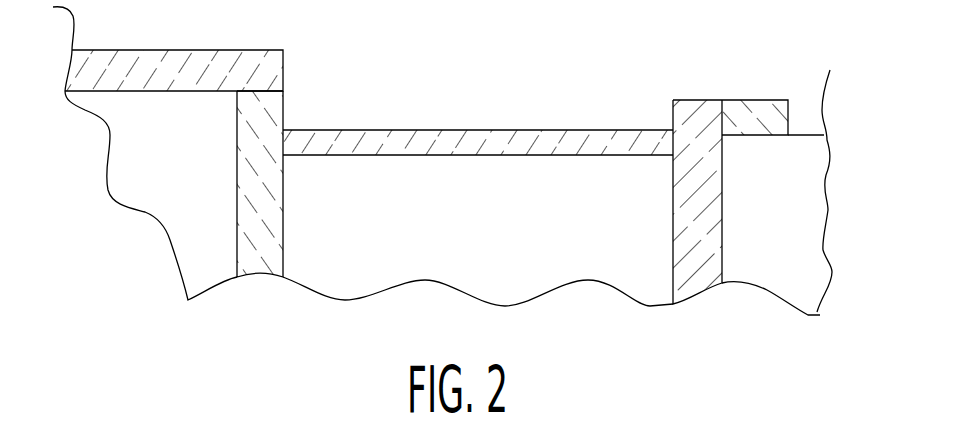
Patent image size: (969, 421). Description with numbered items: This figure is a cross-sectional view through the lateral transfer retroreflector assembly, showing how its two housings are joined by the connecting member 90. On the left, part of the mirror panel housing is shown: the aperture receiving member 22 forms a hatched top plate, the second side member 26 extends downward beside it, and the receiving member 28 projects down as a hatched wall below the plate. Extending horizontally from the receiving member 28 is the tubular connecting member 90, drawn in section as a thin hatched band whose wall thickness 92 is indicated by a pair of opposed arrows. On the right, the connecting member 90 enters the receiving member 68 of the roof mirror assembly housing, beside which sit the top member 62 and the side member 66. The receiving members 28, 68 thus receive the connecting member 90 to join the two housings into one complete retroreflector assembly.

The aperture receiving member 22 is at (180, 60).
The second side member 26 is at (166, 197).
The receiving member 28 is at (261, 258).
The connecting member 90 is at (350, 124).
The thickness 92 is at (489, 161).
The top member 62 is at (752, 105).
The receiving member 68 is at (700, 280).
The side member 66 is at (788, 283).